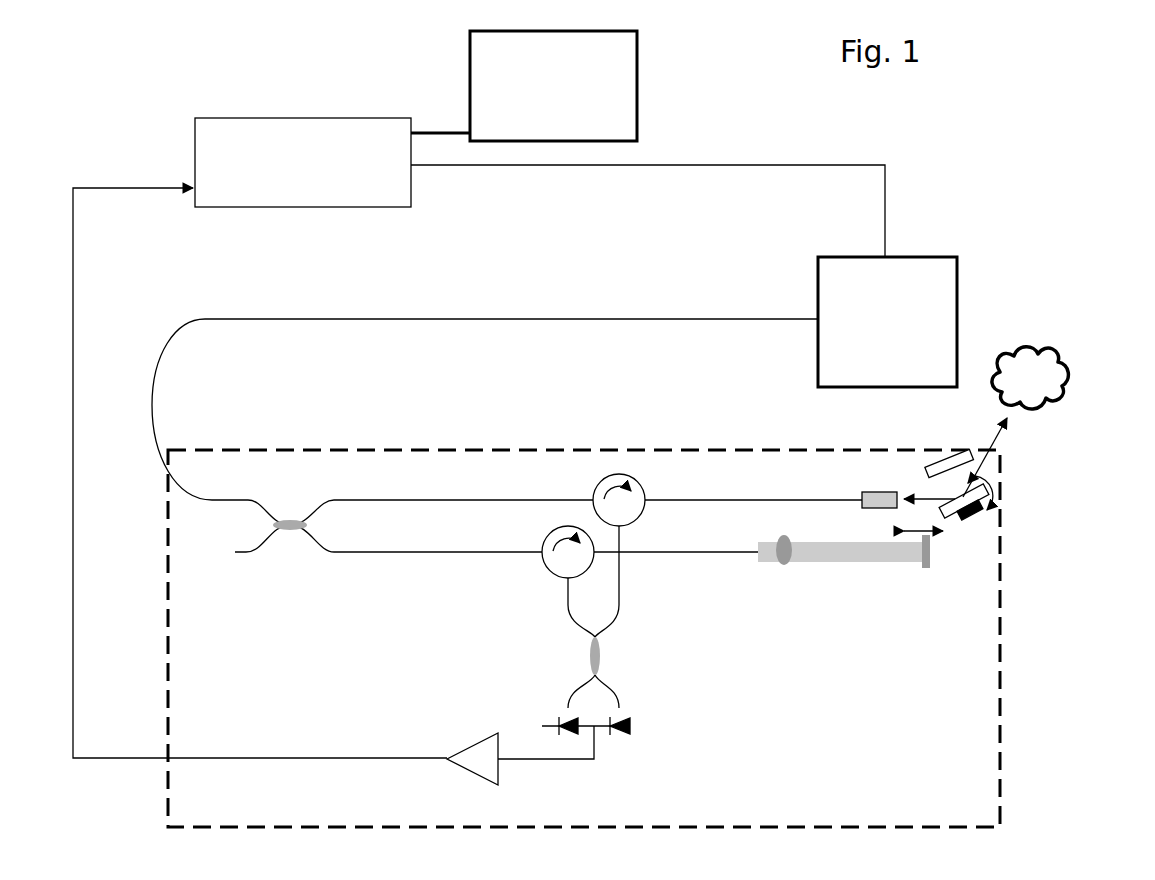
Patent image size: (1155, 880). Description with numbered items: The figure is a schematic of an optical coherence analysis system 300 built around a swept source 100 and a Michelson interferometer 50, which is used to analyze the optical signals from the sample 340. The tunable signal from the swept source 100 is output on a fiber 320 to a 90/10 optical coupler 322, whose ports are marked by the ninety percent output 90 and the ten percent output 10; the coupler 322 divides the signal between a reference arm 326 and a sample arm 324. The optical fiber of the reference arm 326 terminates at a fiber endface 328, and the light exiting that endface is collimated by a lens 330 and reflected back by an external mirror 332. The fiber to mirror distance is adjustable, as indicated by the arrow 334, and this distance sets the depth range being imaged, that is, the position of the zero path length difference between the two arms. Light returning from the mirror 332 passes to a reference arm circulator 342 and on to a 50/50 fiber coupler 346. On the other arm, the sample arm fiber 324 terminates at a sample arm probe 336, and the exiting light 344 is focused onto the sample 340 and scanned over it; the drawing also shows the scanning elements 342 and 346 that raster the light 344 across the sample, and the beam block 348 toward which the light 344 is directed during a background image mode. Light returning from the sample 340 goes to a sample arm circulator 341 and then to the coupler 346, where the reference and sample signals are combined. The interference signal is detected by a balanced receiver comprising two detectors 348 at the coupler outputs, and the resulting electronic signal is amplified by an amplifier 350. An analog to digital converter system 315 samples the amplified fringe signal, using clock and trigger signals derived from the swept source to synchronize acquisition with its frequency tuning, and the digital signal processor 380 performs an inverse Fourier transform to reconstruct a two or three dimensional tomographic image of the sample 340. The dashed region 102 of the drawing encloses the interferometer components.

The optical coherence analysis system 300 is at (962, 135).
The analog to digital converter system 315 is at (333, 118).
The digital signal processor 380 is at (524, 86).
The swept source 100 is at (818, 285).
The fiber 320 is at (530, 318).
The Michelson interferometer 50 is at (584, 638).
The 90/10 optical coupler 322 is at (282, 520).
The 90 percent coupler port 90 is at (298, 510).
The 10 percent coupler port 10 is at (290, 546).
The sample arm 324 is at (445, 500).
The reference arm 326 is at (421, 552).
The sample arm circulator 341 is at (610, 476).
The reference arm circulator 342 is at (545, 565).
The 50/50 fiber coupler 346 is at (602, 655).
The balanced receiver detectors 348 is at (635, 742).
The amplifier 350 is at (498, 785).
The fiber endface 328 is at (760, 550).
The lens 330 is at (780, 568).
The mirror 332 is at (928, 570).
The arrow 334 is at (906, 529).
The sample arm probe 336 is at (862, 495).
The exiting light 344 is at (974, 467).
The sample 340 is at (1058, 362).
The interferometer components 102 is at (784, 650).